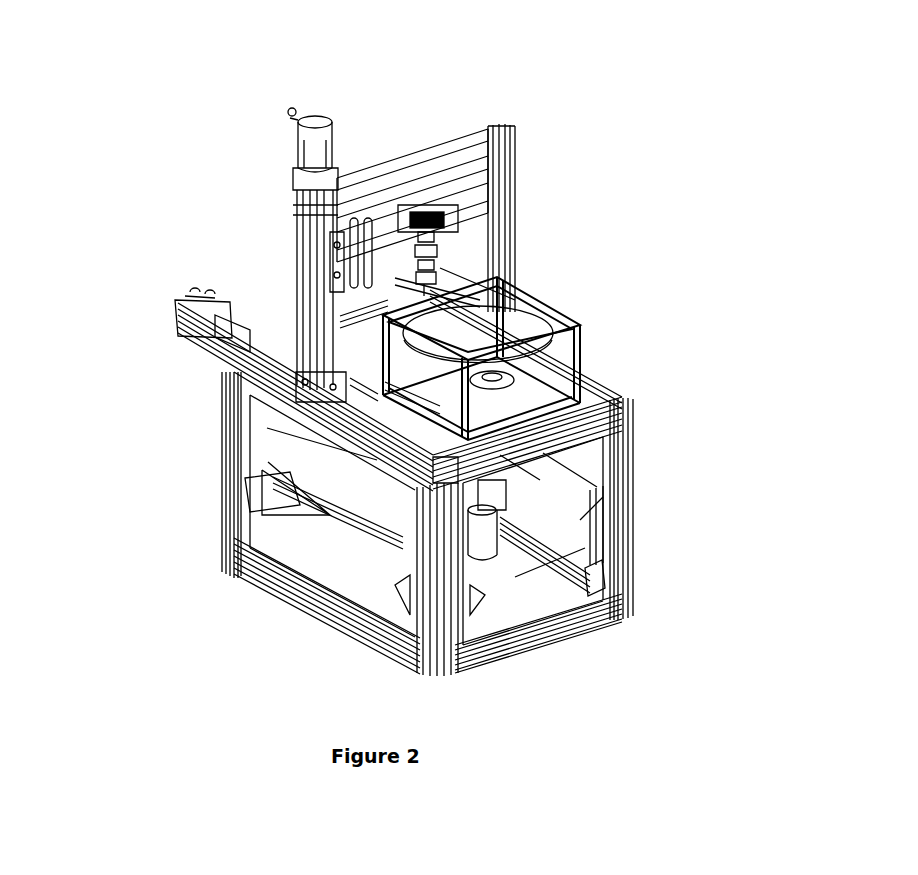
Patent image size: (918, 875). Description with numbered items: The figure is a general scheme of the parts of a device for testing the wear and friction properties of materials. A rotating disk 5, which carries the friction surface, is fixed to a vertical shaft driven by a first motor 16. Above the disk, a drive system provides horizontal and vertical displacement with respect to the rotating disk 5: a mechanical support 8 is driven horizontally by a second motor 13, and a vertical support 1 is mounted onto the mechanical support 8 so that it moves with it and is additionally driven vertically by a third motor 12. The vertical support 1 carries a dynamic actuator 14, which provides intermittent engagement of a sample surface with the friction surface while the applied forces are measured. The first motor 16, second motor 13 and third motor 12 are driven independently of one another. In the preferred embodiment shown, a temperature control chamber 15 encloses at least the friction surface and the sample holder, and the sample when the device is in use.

The vertical support 1 is at (462, 206).
The rotating disk 5 is at (494, 323).
The mechanical support 8 is at (290, 290).
The third motor 12 is at (315, 98).
The second motor 13 is at (160, 326).
The dynamic actuator 14 is at (452, 243).
The temperature control chamber 15 is at (426, 380).
The first motor 16 is at (517, 531).